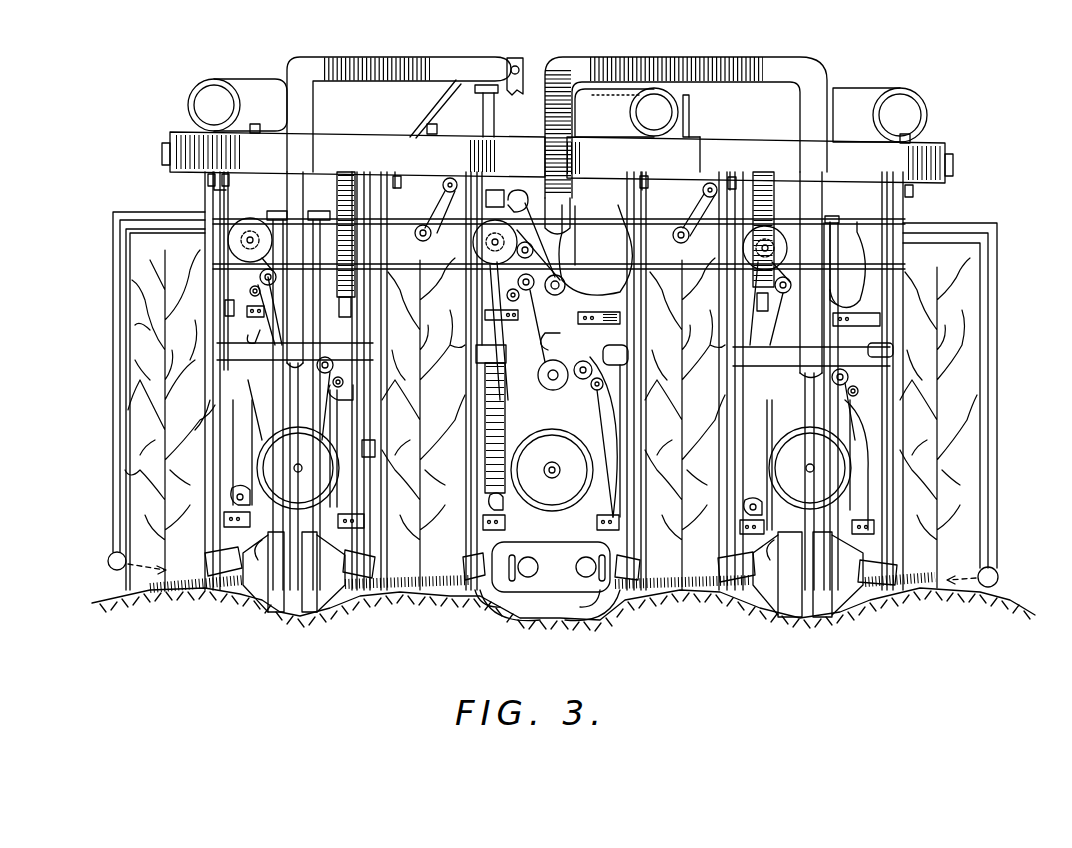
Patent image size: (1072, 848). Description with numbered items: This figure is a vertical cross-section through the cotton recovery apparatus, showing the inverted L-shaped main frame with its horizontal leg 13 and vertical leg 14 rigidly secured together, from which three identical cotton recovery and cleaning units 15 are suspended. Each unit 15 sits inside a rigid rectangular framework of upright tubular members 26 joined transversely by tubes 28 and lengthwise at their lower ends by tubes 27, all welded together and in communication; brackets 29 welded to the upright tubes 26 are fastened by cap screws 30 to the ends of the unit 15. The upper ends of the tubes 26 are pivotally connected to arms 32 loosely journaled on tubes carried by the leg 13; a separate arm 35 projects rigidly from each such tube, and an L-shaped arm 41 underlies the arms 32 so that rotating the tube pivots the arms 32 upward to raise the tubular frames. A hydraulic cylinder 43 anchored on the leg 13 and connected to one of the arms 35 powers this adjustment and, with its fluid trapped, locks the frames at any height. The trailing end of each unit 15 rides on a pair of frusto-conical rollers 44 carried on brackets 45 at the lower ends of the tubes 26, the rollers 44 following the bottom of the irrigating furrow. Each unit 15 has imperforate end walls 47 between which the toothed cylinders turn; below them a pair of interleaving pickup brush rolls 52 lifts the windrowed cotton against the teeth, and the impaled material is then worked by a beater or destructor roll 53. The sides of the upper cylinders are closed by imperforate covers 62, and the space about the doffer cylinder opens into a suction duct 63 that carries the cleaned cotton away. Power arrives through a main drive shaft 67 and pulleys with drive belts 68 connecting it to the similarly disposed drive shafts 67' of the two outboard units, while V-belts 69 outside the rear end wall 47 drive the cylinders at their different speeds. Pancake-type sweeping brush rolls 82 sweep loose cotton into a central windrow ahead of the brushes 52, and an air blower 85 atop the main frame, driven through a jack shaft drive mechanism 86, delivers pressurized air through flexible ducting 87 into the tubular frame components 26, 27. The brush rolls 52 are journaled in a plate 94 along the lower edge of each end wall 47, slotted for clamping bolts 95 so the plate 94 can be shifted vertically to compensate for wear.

The horizontally disposed leg 13 is at (716, 138).
The vertically disposed leg 14 is at (338, 158).
The cotton recovery and cleaning unit 15 is at (312, 244).
The upright tubular member 26 is at (205, 246).
The tube 27 is at (108, 553).
The tube 28 is at (325, 385).
The bracket 29 is at (225, 300).
The cap screw 30 is at (250, 333).
The arm 32 is at (212, 188).
The arm 35 is at (200, 124).
The L-shaped arm 41 is at (200, 183).
The hydraulic cylinder 43 is at (686, 125).
The frusto-conical roller 44 is at (305, 620).
The bracket 45 is at (222, 580).
The end wall 47 is at (898, 515).
The brush roll 52 is at (248, 600).
The beater roll 53 is at (230, 500).
The imperforate cover 62 is at (866, 95).
The duct 63 is at (240, 90).
The drive shaft 67 is at (485, 242).
The pulleys 67' is at (507, 232).
The drive belt 68 is at (412, 260).
The V-belt 69 is at (296, 405).
The sweeping brush roll 82 is at (195, 590).
The air blower 85 is at (538, 60).
The jack shaft drive mechanism 86 is at (486, 122).
The pipes 87 is at (353, 58).
The mounting plate 94 is at (262, 548).
The clamping bolt 95 is at (505, 622).